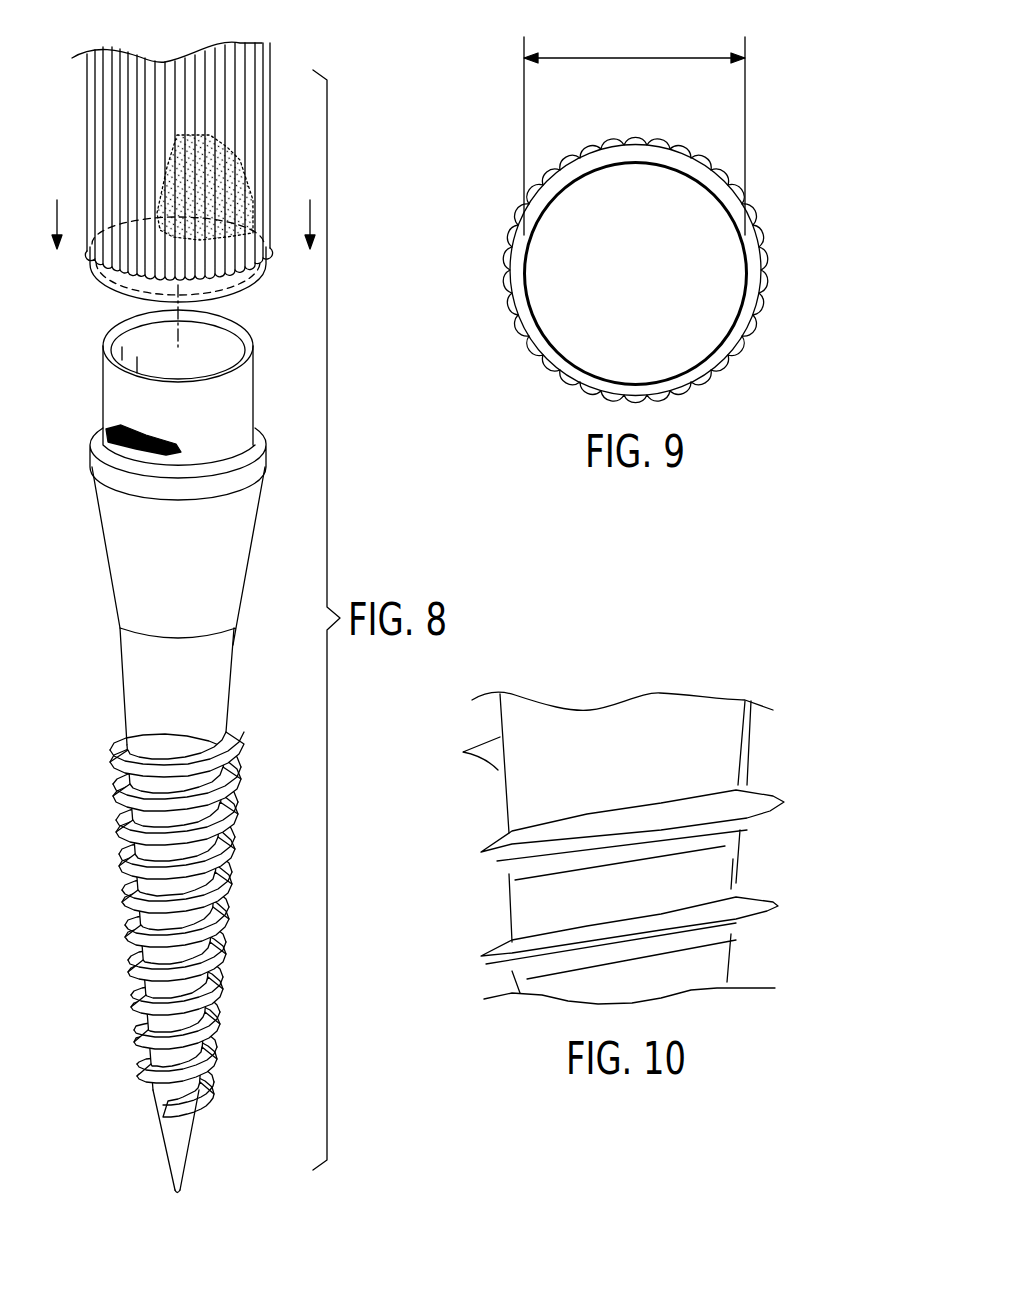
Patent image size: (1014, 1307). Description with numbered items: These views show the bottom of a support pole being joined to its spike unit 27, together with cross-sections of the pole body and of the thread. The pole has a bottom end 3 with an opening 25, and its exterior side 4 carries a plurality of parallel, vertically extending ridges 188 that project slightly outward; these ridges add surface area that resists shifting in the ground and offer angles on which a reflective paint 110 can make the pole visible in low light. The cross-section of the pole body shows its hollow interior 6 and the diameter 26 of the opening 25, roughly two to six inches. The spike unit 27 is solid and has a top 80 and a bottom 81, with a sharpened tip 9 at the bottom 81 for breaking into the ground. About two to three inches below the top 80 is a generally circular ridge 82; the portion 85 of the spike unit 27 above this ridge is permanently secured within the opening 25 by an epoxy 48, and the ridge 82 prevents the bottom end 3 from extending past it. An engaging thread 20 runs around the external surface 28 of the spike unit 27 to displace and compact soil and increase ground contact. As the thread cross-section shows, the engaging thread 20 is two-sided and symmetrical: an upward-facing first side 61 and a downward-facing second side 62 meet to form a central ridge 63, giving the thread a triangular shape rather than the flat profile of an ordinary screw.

In FIG. 8, the exterior side 4 is at (220, 72).
In FIG. 9, the exterior side 4 is at (717, 370).
In FIG. 8, the plurality of extending ridges 188 is at (247, 152).
In FIG. 9, the plurality of extending ridges 188 is at (501, 269).
In FIG. 8, the reflective paint 110 is at (213, 165).
In FIG. 8, the bottom end 3 is at (260, 274).
In FIG. 8, the opening 25 is at (220, 300).
In FIG. 8, the top 80 is at (123, 317).
In FIG. 8, the portion of the spike unit above the generally circular ridge 85 is at (243, 397).
In FIG. 8, the epoxy 48 is at (110, 435).
In FIG. 8, the generally circular ridge 82 is at (93, 463).
In FIG. 8, the external surface 28 is at (227, 535).
In FIG. 8, the spike unit 27 is at (207, 688).
In FIG. 10, the spike unit 27 is at (643, 747).
In FIG. 8, the first side 61 is at (122, 740).
In FIG. 10, the first side 61 is at (493, 841).
In FIG. 8, the central ridge 63 is at (118, 752).
In FIG. 10, the central ridge 63 is at (481, 852).
In FIG. 8, the second side 62 is at (122, 763).
In FIG. 10, the second side 62 is at (481, 867).
In FIG. 8, the engaging thread 20 is at (166, 956).
In FIG. 8, the sharpened tip 9 is at (177, 1193).
In FIG. 8, the bottom 81 is at (173, 1197).
In FIG. 9, the diameter 26 is at (636, 58).
In FIG. 9, the interior 6 is at (576, 299).